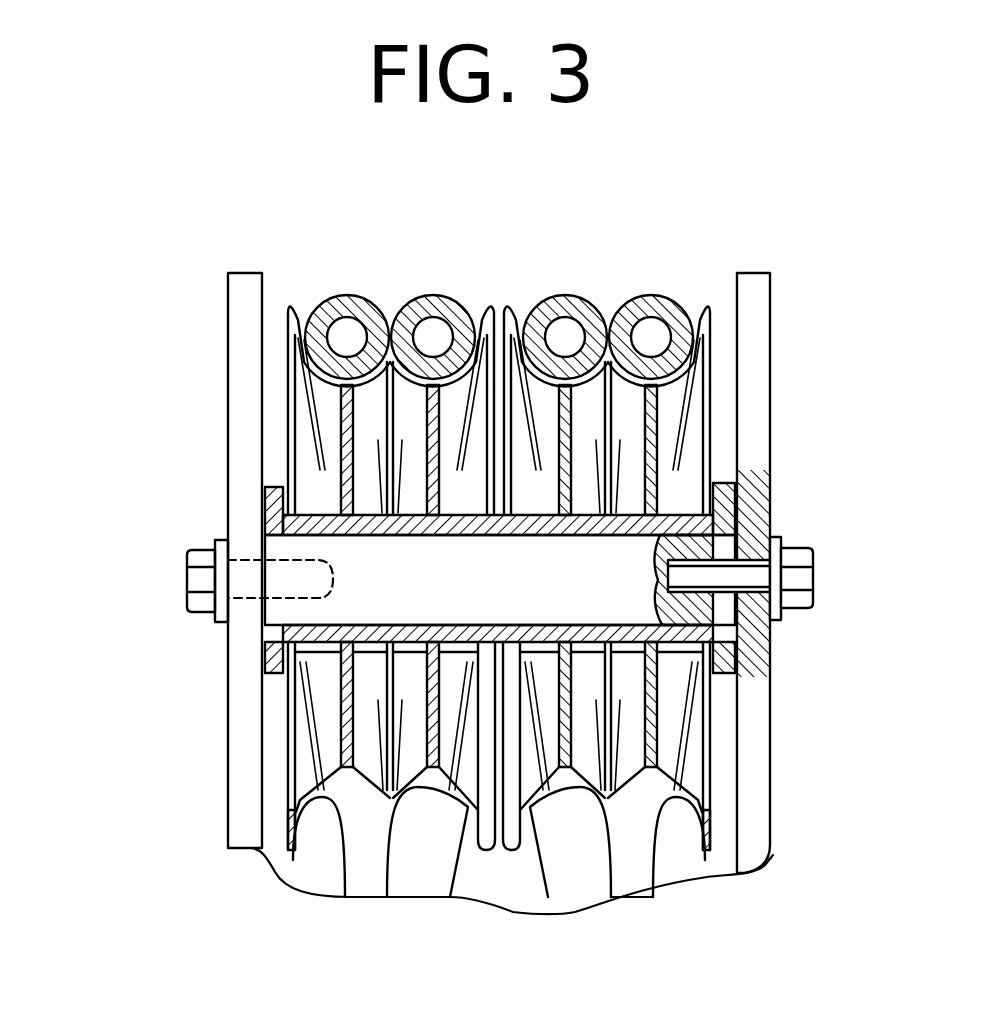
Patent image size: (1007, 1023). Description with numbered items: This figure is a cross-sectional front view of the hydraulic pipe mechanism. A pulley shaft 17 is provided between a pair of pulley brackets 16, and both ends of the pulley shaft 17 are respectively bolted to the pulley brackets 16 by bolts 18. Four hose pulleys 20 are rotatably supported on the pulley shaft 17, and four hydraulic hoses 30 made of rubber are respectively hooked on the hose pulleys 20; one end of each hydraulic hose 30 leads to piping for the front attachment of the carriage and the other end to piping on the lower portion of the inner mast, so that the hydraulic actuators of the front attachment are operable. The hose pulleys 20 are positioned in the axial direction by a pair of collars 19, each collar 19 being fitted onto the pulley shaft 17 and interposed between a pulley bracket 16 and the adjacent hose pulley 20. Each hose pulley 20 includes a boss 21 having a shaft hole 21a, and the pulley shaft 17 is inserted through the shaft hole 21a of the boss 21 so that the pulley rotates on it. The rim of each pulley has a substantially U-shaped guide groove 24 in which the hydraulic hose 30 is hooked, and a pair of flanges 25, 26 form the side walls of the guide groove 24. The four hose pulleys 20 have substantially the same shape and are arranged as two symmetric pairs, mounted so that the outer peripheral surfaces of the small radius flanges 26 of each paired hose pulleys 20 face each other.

The pulley bracket 16 is at (245, 813).
The pulley shaft 17 is at (287, 608).
The bolt 18 is at (183, 553).
The collar 19 is at (268, 650).
The hose pulley 20 is at (323, 426).
The boss 21 is at (267, 527).
The shaft hole 21a is at (308, 540).
The guide groove 24 is at (345, 880).
The flange 25 is at (283, 880).
The small radius flange 26 is at (392, 880).
The hydraulic hose 30 is at (322, 296).